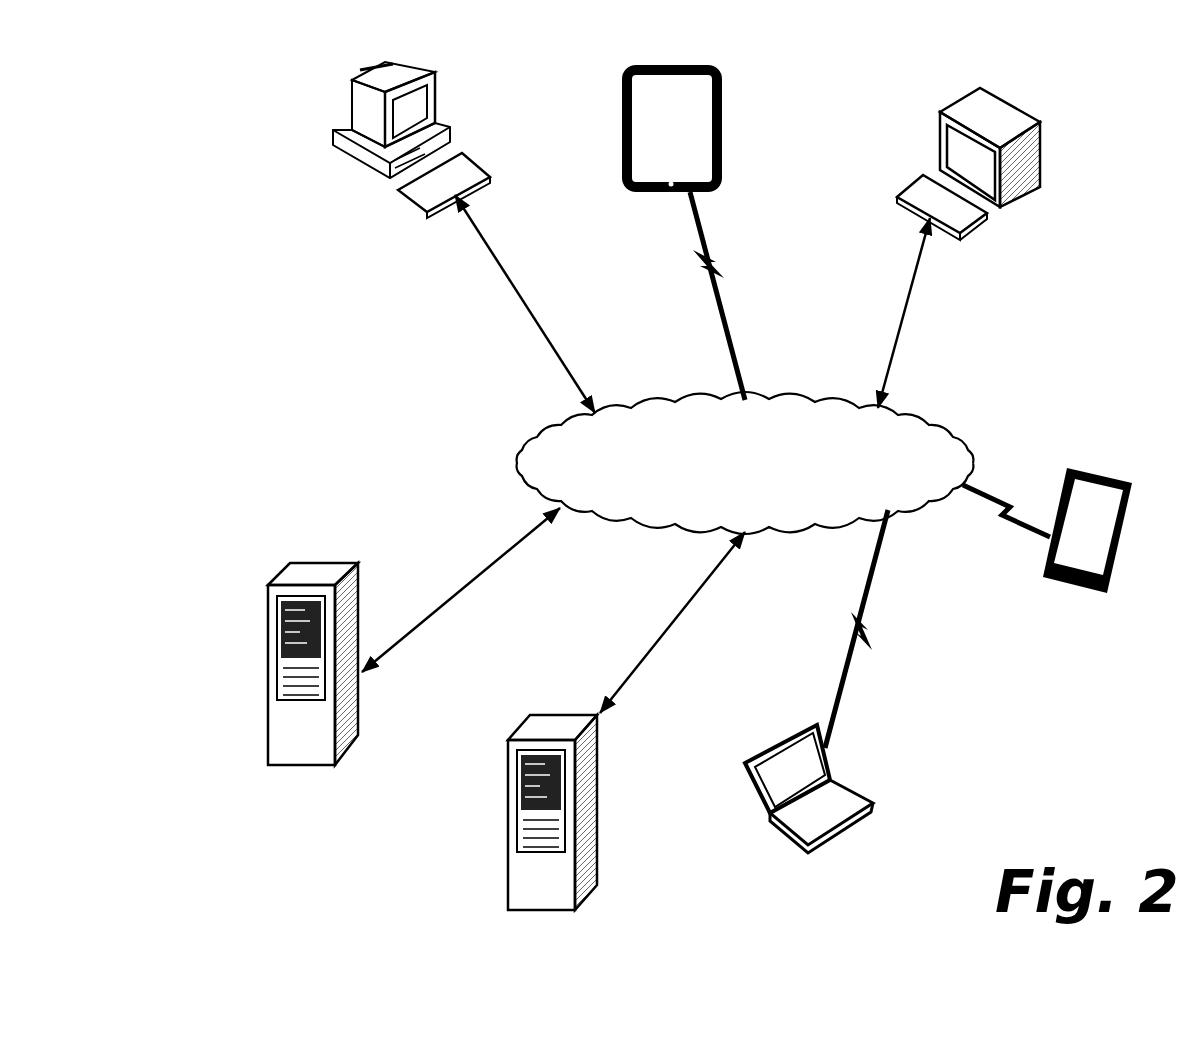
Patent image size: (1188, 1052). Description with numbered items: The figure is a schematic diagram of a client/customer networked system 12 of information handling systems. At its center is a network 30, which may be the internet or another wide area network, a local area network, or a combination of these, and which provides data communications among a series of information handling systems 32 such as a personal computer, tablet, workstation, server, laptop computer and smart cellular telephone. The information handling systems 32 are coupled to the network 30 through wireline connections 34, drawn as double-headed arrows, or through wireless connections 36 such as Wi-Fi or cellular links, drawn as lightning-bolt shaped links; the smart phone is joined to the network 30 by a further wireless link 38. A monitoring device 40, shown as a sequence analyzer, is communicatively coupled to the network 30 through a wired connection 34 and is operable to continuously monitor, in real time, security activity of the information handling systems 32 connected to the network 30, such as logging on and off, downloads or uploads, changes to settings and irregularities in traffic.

The client/customer networked system 12 is at (220, 437).
The network 30 is at (794, 397).
The information handling system 32 is at (437, 72).
The wireline connection 34 is at (515, 283).
The wireless connection 36 is at (722, 321).
The wireless connection 38 is at (1005, 488).
The monitoring device 40 is at (602, 860).